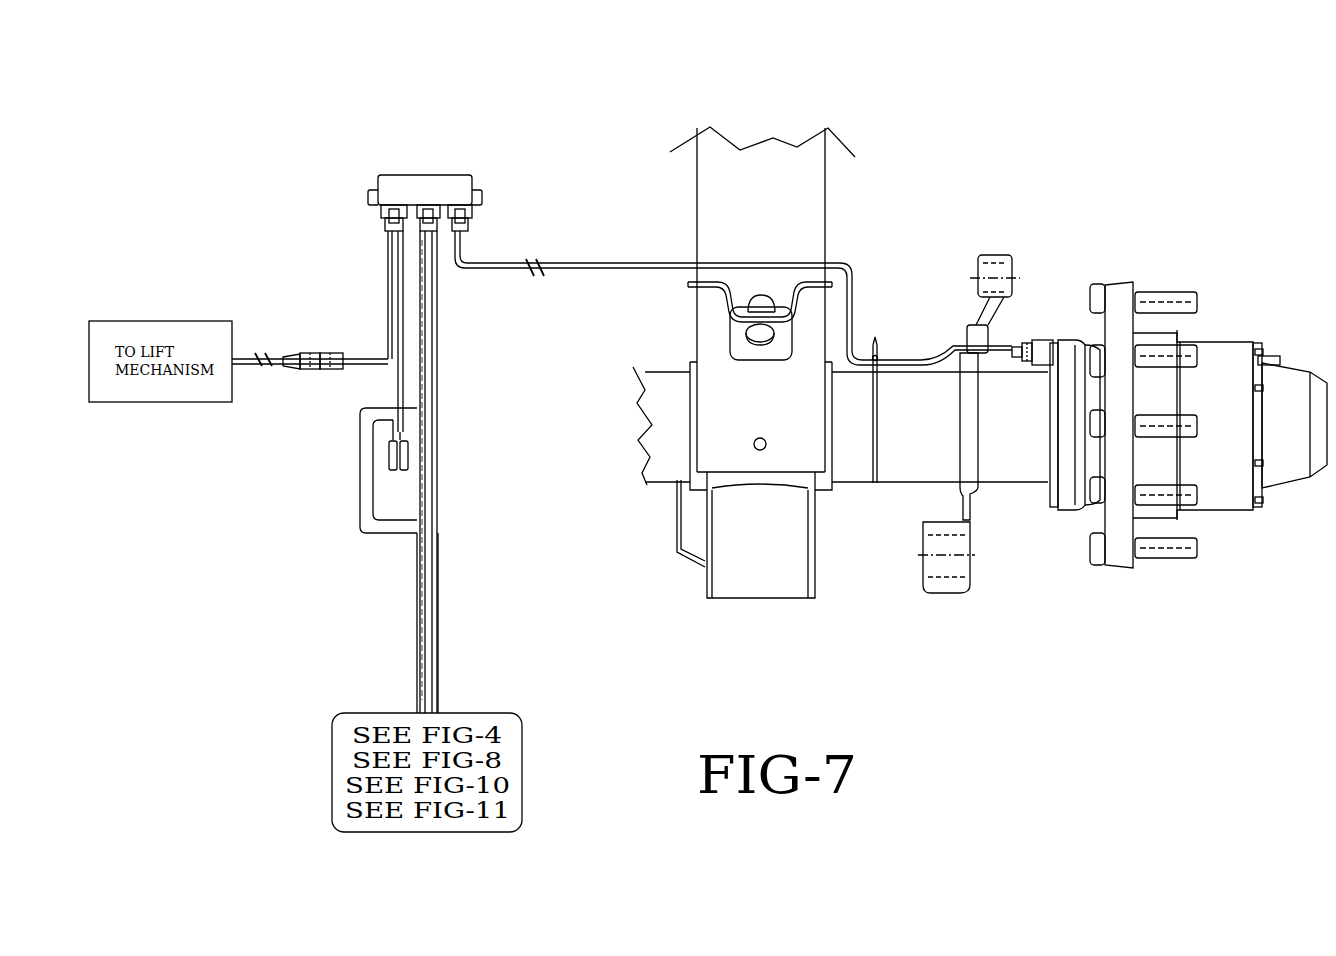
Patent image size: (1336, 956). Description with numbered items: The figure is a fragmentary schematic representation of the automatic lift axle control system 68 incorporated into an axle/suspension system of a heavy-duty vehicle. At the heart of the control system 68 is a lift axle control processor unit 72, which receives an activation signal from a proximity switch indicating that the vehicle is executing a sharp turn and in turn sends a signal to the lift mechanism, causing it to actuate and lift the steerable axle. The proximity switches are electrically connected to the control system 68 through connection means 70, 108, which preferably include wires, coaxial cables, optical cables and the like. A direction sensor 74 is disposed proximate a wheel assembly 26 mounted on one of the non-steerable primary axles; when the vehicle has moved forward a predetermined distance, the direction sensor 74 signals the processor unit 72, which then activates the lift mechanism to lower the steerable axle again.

The wheel assembly 26 is at (1121, 284).
The automatic lift axle control system 68 is at (556, 190).
The connection means 70 is at (686, 472).
The connection means 108 is at (443, 598).
The lift axle control processor unit 72 is at (422, 176).
The direction sensor 74 is at (1015, 340).